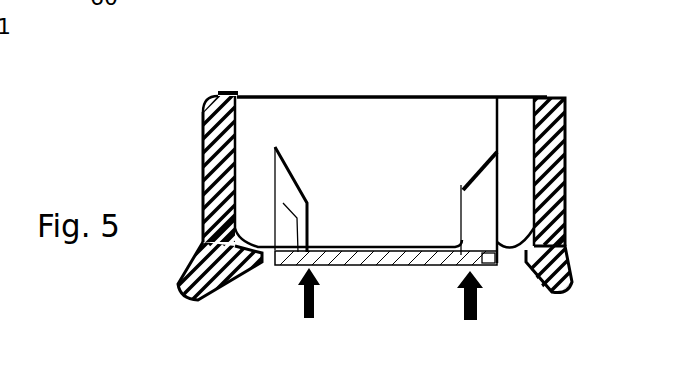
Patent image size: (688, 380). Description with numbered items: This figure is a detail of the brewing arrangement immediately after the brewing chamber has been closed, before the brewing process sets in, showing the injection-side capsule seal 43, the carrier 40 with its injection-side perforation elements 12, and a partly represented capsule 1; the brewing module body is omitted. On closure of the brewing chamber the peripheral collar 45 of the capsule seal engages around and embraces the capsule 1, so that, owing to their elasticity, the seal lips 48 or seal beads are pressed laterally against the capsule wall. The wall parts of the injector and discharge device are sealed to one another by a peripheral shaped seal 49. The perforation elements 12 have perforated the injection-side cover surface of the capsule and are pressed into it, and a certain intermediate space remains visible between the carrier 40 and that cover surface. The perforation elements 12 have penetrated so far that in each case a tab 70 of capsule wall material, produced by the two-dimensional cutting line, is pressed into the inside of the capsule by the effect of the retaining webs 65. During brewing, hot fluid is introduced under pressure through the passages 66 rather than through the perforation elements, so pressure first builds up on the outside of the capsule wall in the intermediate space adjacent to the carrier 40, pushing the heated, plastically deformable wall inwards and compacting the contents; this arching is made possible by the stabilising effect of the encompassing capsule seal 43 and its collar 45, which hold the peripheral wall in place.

The capsule 1 is at (372, 138).
The injection-side perforation elements 12 is at (285, 203).
The carrier 40 is at (380, 258).
The injection-side capsule seal 43 is at (213, 210).
The peripheral collar 45 is at (207, 128).
The seal lips 48 is at (223, 183).
The peripheral shaped seal 49 is at (218, 295).
The retaining webs 65 is at (470, 205).
The passages 66 is at (467, 252).
The tab 70 is at (466, 253).